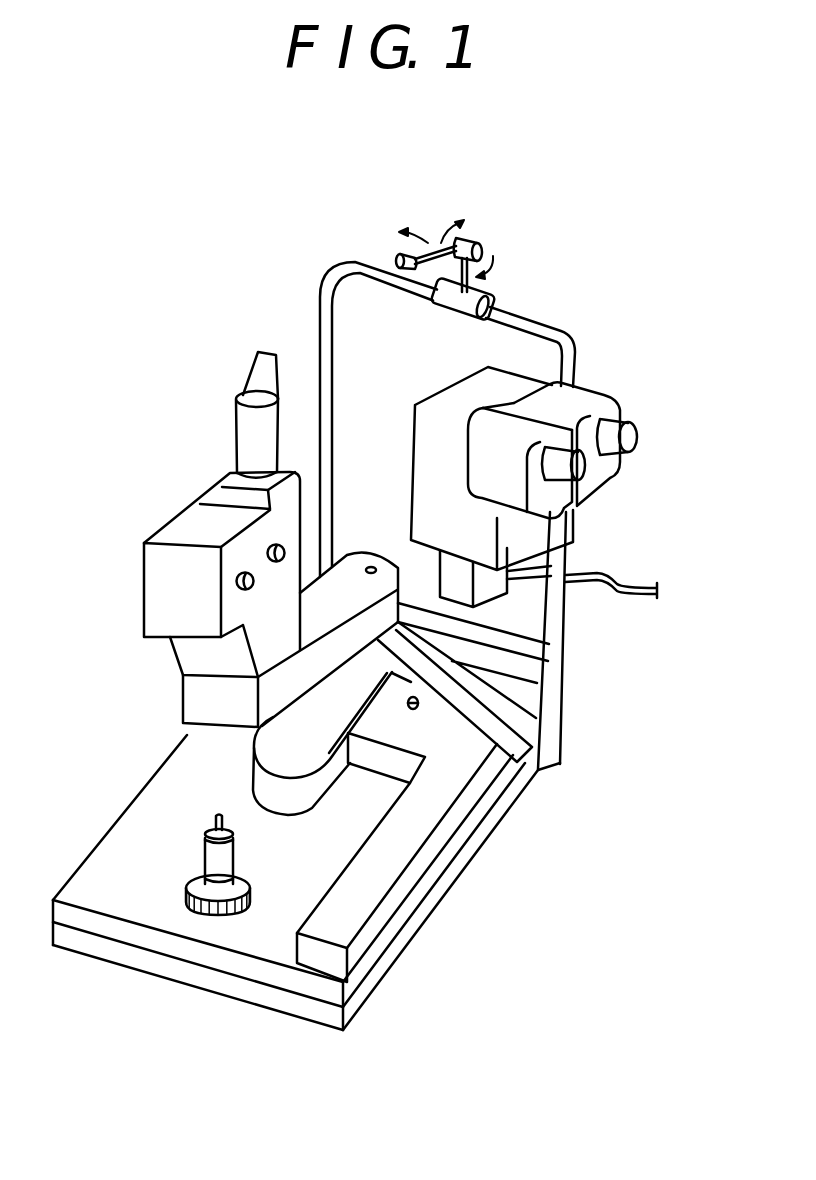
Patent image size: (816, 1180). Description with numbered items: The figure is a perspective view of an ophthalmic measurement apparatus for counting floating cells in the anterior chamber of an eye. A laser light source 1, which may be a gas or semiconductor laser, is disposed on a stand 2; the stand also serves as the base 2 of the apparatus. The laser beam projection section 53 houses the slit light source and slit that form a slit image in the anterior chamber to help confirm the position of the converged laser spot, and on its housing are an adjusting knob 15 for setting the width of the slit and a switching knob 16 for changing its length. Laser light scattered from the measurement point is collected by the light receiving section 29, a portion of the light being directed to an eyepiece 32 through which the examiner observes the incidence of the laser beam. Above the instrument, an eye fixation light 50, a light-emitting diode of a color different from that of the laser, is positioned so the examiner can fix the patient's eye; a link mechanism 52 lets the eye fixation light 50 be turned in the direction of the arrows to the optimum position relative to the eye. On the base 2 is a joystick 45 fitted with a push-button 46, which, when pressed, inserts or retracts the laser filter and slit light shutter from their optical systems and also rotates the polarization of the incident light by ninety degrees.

The laser light source 1 is at (437, 847).
The stand 2 is at (177, 972).
The adjusting knob 15 is at (270, 546).
The switching knob 16 is at (238, 576).
The light receiving section 29 is at (567, 522).
The eyepiece 32 is at (634, 428).
The joystick 45 is at (208, 857).
The push-button 46 is at (216, 815).
The eye fixation light 50 is at (399, 256).
The link mechanism 52 is at (483, 251).
The laser beam projection section 53 is at (152, 618).